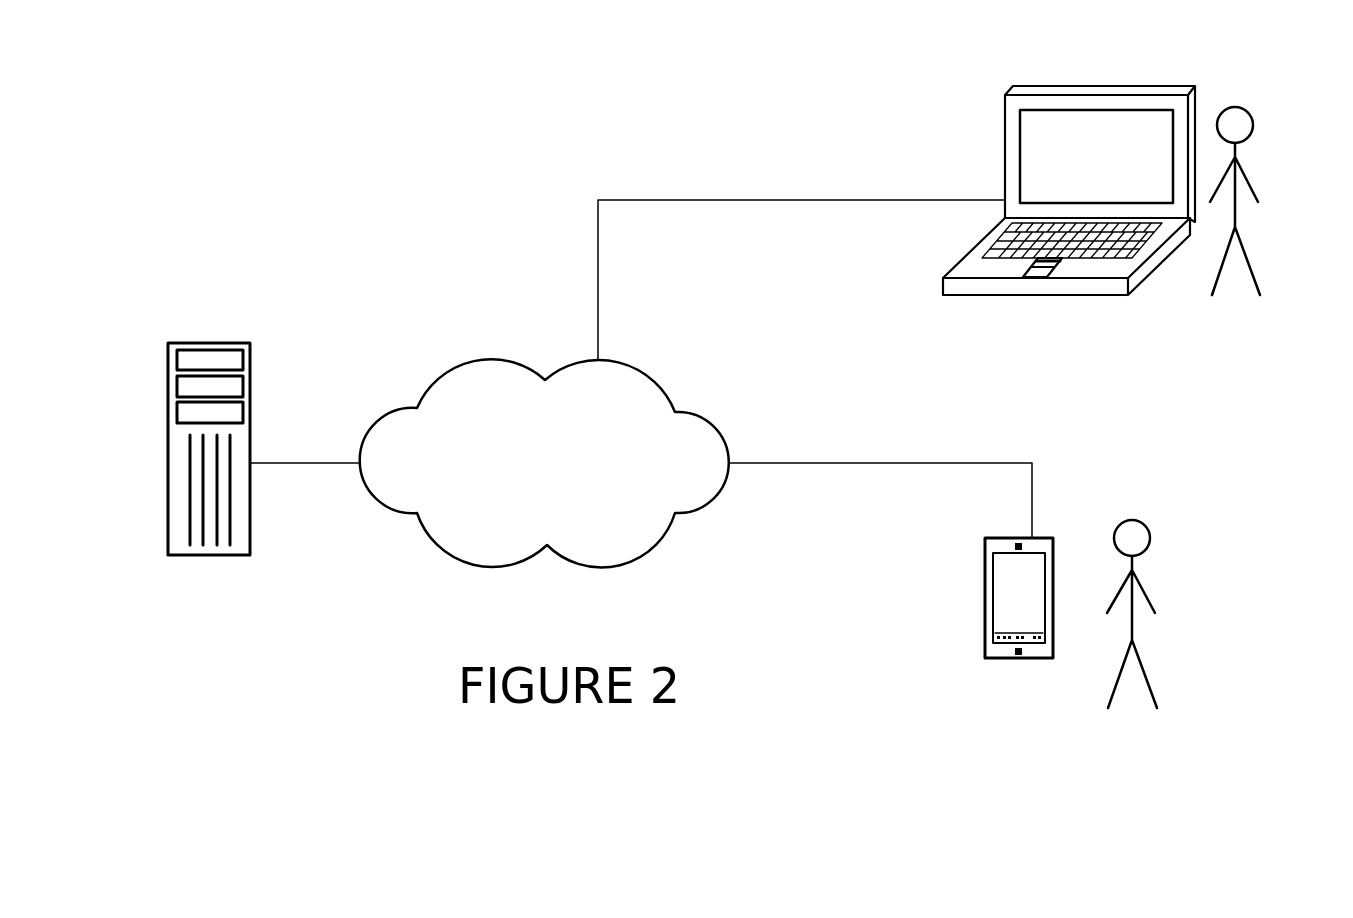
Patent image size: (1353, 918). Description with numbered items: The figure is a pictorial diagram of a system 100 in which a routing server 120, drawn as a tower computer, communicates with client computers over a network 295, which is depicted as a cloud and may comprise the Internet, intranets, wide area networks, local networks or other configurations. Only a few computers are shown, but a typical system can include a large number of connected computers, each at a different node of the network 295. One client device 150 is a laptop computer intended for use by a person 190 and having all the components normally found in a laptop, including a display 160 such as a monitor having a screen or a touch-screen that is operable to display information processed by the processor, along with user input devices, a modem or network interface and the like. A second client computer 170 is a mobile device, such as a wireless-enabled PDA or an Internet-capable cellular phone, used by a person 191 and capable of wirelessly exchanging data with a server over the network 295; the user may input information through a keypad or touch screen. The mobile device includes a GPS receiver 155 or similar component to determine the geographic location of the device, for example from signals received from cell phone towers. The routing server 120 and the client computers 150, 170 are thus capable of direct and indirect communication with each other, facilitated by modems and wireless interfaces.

The system 100 is at (643, 133).
The routing server 120 is at (234, 342).
The network 295 is at (494, 358).
The client device 150 is at (1005, 148).
The display 160 is at (1072, 110).
The person 190 is at (1235, 202).
The GPS receiver 155 is at (985, 538).
The client computer 170 is at (993, 597).
The person 191 is at (1132, 613).